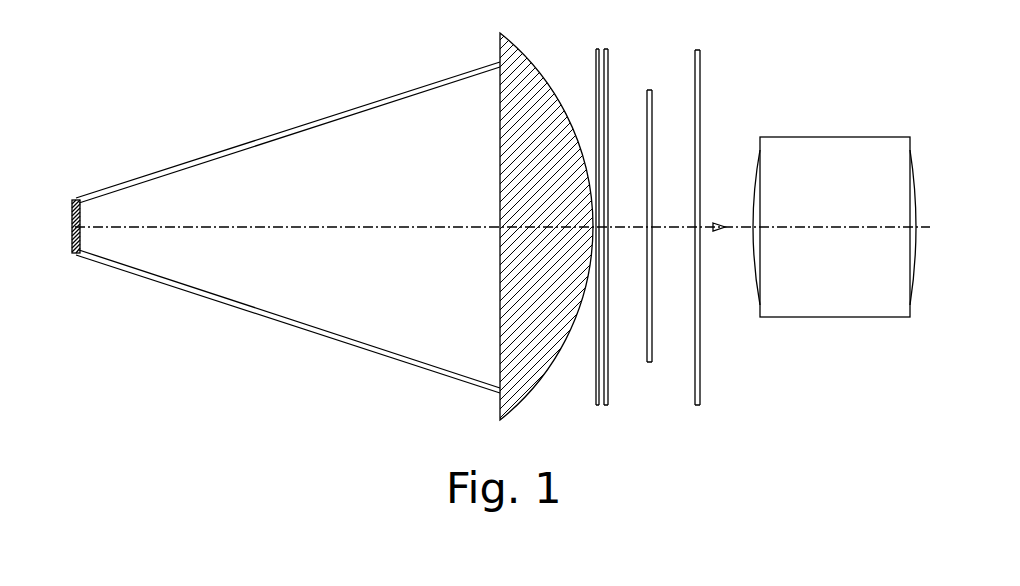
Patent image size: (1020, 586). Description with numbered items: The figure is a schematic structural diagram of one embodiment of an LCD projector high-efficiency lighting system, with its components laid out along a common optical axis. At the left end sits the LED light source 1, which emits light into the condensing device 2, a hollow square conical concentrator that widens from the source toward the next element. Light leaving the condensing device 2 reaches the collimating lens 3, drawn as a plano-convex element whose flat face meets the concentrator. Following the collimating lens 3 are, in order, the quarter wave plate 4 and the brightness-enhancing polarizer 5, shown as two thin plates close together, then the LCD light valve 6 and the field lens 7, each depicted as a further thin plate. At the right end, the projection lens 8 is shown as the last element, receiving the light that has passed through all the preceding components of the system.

The LED light source 1 is at (77, 240).
The condensing device 2 is at (178, 288).
The collimating lens 3 is at (542, 376).
The quarter wave plate 4 is at (596, 50).
The brightness-enhancing polarizer 5 is at (608, 60).
The LCD light valve 6 is at (649, 91).
The field lens 7 is at (700, 64).
The projection lens 8 is at (846, 140).